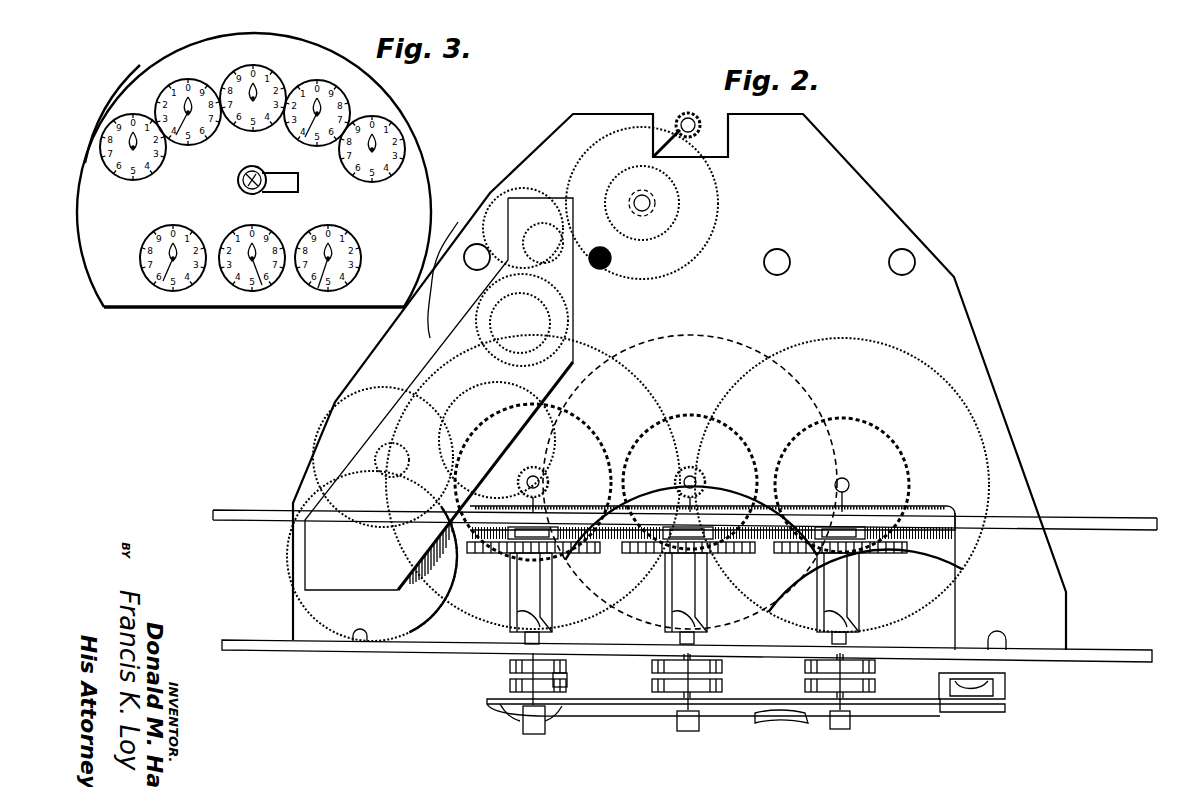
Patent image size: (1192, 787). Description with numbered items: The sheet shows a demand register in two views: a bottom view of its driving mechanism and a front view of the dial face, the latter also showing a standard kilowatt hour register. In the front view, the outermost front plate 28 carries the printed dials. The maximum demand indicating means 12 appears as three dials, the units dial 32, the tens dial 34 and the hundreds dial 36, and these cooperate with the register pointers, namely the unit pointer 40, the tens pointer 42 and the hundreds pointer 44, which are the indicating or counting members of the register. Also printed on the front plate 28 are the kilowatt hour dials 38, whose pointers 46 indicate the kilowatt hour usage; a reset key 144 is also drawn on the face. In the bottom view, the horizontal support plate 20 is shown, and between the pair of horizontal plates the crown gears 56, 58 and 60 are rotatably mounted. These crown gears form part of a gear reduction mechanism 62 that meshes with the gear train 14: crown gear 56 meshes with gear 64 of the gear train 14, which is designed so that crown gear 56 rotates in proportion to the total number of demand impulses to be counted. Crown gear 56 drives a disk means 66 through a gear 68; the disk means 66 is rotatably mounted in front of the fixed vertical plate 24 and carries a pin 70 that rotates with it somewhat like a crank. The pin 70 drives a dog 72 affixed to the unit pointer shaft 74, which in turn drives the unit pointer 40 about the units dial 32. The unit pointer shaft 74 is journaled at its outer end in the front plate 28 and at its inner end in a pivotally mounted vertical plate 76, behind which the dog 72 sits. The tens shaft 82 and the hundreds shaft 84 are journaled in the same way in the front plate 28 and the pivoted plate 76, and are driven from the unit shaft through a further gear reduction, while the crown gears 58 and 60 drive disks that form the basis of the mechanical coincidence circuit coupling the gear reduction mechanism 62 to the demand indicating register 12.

In FIG. 3, the maximum demand indicating means 12 is at (132, 278).
In FIG. 3, the front plate 28 is at (132, 90).
In FIG. 3, the kilowatt hour dials 38 is at (295, 85).
In FIG. 3, the kilowatt hour pointers 46 is at (272, 139).
In FIG. 3, the reset key 144 is at (298, 192).
In FIG. 3, the hundreds dial 36 is at (190, 226).
In FIG. 3, the tens dial 34 is at (268, 228).
In FIG. 3, the units dial 32 is at (343, 229).
In FIG. 3, the hundreds pointer 44 is at (163, 282).
In FIG. 3, the tens pointer 42 is at (262, 286).
In FIG. 3, the unit pointer 40 is at (318, 292).
In FIG. 2, the gear train 14 is at (466, 215).
In FIG. 2, the horizontal support plate 20 is at (962, 262).
In FIG. 2, the fixed vertical plate 24 is at (1142, 662).
In FIG. 2, the crown gear 56 is at (585, 372).
In FIG. 2, the crown gear 58 is at (692, 413).
In FIG. 2, the crown gear 60 is at (897, 440).
In FIG. 2, the gear reduction mechanism 62 is at (690, 336).
In FIG. 2, the gear 64 is at (358, 410).
In FIG. 2, the disk means 66 is at (508, 666).
In FIG. 2, the gear 68 is at (505, 555).
In FIG. 2, the pin 70 is at (567, 676).
In FIG. 2, the dog 72 is at (508, 686).
In FIG. 2, the unit pointer shaft 74 is at (532, 735).
In FIG. 2, the pivotally mounted vertical plate 76 is at (935, 713).
In FIG. 2, the tens shaft 82 is at (689, 735).
In FIG. 2, the hundreds shaft 84 is at (841, 733).